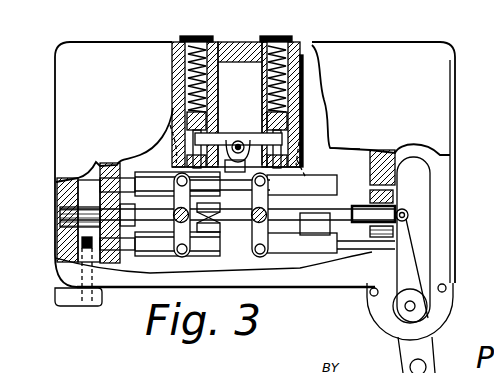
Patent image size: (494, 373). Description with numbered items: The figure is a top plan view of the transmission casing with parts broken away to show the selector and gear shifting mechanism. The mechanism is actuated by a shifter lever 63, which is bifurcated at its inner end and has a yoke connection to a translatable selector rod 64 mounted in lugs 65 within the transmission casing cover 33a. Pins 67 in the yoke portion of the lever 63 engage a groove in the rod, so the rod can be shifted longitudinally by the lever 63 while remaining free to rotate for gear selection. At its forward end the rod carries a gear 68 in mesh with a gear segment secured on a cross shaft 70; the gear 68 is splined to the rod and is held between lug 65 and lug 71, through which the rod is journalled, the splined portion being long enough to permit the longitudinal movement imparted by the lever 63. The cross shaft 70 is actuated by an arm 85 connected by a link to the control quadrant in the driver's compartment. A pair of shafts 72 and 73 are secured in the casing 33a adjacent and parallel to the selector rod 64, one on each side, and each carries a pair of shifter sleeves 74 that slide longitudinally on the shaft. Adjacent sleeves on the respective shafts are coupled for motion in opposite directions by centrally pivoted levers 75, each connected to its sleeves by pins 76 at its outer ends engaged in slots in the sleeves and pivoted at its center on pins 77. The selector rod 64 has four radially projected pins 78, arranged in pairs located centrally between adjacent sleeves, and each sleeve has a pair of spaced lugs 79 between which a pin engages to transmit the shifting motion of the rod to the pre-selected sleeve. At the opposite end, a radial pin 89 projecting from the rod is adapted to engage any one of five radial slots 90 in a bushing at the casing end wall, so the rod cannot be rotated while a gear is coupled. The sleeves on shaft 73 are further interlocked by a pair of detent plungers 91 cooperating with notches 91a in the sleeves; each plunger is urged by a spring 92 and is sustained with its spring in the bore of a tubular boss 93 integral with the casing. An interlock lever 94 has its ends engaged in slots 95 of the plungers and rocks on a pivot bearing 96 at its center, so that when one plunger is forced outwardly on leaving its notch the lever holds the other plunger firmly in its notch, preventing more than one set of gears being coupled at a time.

The transmission casing cover 33a is at (441, 130).
The shifter lever 63 is at (406, 262).
The selector rod 64 is at (347, 190).
The lug 65 is at (93, 170).
The pin 67 is at (410, 214).
The gear 68 is at (62, 224).
The cross shaft 70 is at (82, 252).
The lug 71 is at (65, 200).
The shaft 72 is at (368, 253).
The shaft 73 is at (372, 150).
The shifter sleeve 74 is at (307, 250).
The centrally pivoted lever 75 is at (208, 260).
The pin 76 is at (262, 258).
The pin 77 is at (257, 253).
The radially projected pin 78 is at (222, 225).
The lug 79 is at (343, 253).
The arm 85 is at (68, 306).
The radial pin 89 is at (392, 195).
The radial slot 90 is at (392, 228).
The detent plunger 91 is at (219, 112).
The notch 91a is at (167, 136).
The spring 92 is at (313, 93).
The tubular boss 93 is at (313, 70).
The interlock lever 94 is at (312, 106).
The slot 95 is at (322, 122).
The pivot bearing 96 is at (238, 141).